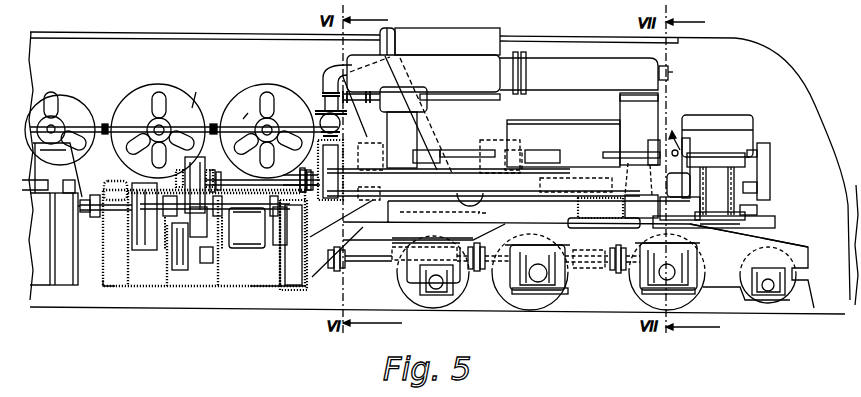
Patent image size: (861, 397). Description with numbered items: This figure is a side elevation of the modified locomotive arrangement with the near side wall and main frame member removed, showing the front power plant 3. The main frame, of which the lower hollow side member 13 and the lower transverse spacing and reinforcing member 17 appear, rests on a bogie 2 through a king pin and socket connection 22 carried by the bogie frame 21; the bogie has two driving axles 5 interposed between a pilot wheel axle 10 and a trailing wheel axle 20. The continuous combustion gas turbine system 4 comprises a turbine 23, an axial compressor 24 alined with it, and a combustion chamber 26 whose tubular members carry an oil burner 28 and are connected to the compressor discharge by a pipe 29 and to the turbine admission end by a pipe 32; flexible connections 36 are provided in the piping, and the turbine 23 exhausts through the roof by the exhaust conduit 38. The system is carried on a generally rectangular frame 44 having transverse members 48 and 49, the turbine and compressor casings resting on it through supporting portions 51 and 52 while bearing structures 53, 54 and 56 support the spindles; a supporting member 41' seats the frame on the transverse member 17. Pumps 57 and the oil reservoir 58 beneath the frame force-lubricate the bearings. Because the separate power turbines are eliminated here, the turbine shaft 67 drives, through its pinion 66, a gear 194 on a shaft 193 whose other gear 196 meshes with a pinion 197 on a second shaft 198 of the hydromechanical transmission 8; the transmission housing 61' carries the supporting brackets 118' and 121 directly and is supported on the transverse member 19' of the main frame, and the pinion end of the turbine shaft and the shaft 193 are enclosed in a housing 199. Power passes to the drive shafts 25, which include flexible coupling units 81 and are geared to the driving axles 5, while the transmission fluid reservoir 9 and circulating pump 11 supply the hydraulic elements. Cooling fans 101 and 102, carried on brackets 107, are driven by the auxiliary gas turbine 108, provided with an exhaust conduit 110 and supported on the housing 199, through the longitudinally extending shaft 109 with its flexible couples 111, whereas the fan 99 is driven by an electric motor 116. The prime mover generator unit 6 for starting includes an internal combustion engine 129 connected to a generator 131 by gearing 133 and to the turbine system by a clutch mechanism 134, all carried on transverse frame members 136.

The bogie 2 is at (596, 281).
The power plant 3 is at (326, 70).
The continuous combustion gas turbine system 4 is at (534, 112).
The driving axle 5 is at (536, 267).
The prime mover generator unit 6 is at (776, 137).
The hydromechanical transmission 8 is at (196, 303).
The transmission fluid reservoir 9 is at (55, 281).
The pilot wheel axle 10 is at (768, 293).
The circulating pump 11 is at (63, 186).
The lower side member 13 is at (748, 210).
The lower spacing and reinforcing member 17 is at (667, 212).
The transverse member 19' is at (77, 207).
The trailing wheel axle 20 is at (437, 289).
The bogie frame 21 is at (803, 247).
The king pin and socket connection 22 is at (610, 214).
The turbine 23 is at (405, 118).
The axial compressor 24 is at (600, 126).
The drive shaft 25 is at (374, 259).
The combustion chamber 26 is at (486, 77).
The oil burner 28 is at (669, 77).
The pipe 29 is at (654, 116).
The pipe 32 is at (365, 106).
The flexible connection 36 is at (525, 71).
The exhaust conduit 38 is at (472, 32).
The supporting member 41' is at (641, 207).
The rectangular frame 44 is at (448, 190).
The transverse member 48 is at (530, 211).
The transverse member 49 is at (397, 182).
The supporting portion 51 is at (428, 163).
The supporting portion 52 is at (587, 177).
The bearing structure 53 is at (648, 147).
The bearing structure 54 is at (497, 142).
The bearing structure 56 is at (369, 143).
The pump 57 is at (456, 191).
The oil reservoir 58 is at (450, 213).
The housing 61' is at (277, 295).
The pinion 66 is at (299, 167).
The turbine shaft 67 is at (302, 164).
The flexible coupling unit 81 is at (338, 269).
The fan 99 is at (57, 92).
The fan 101 is at (160, 92).
The fan 102 is at (267, 92).
The bracket 107 is at (225, 99).
The auxiliary gas turbine 108 is at (326, 100).
The longitudinally extending shaft 109 is at (114, 121).
The exhaust conduit 110 is at (387, 30).
The flexible couple 111 is at (213, 122).
The electric motor 116 is at (58, 122).
The supporting bracket 118' is at (417, 232).
The supporting bracket 121 is at (110, 284).
The internal combustion engine 129 is at (737, 118).
The generator 131 is at (720, 170).
The gearing 133 is at (770, 163).
The clutch mechanism 134 is at (683, 147).
The transverse frame member 136 is at (735, 213).
The shaft 193 is at (262, 177).
The gear 194 is at (339, 200).
The gear 196 is at (194, 160).
The pinion 197 is at (247, 228).
The second shaft 198 is at (247, 228).
The housing 199 is at (326, 245).